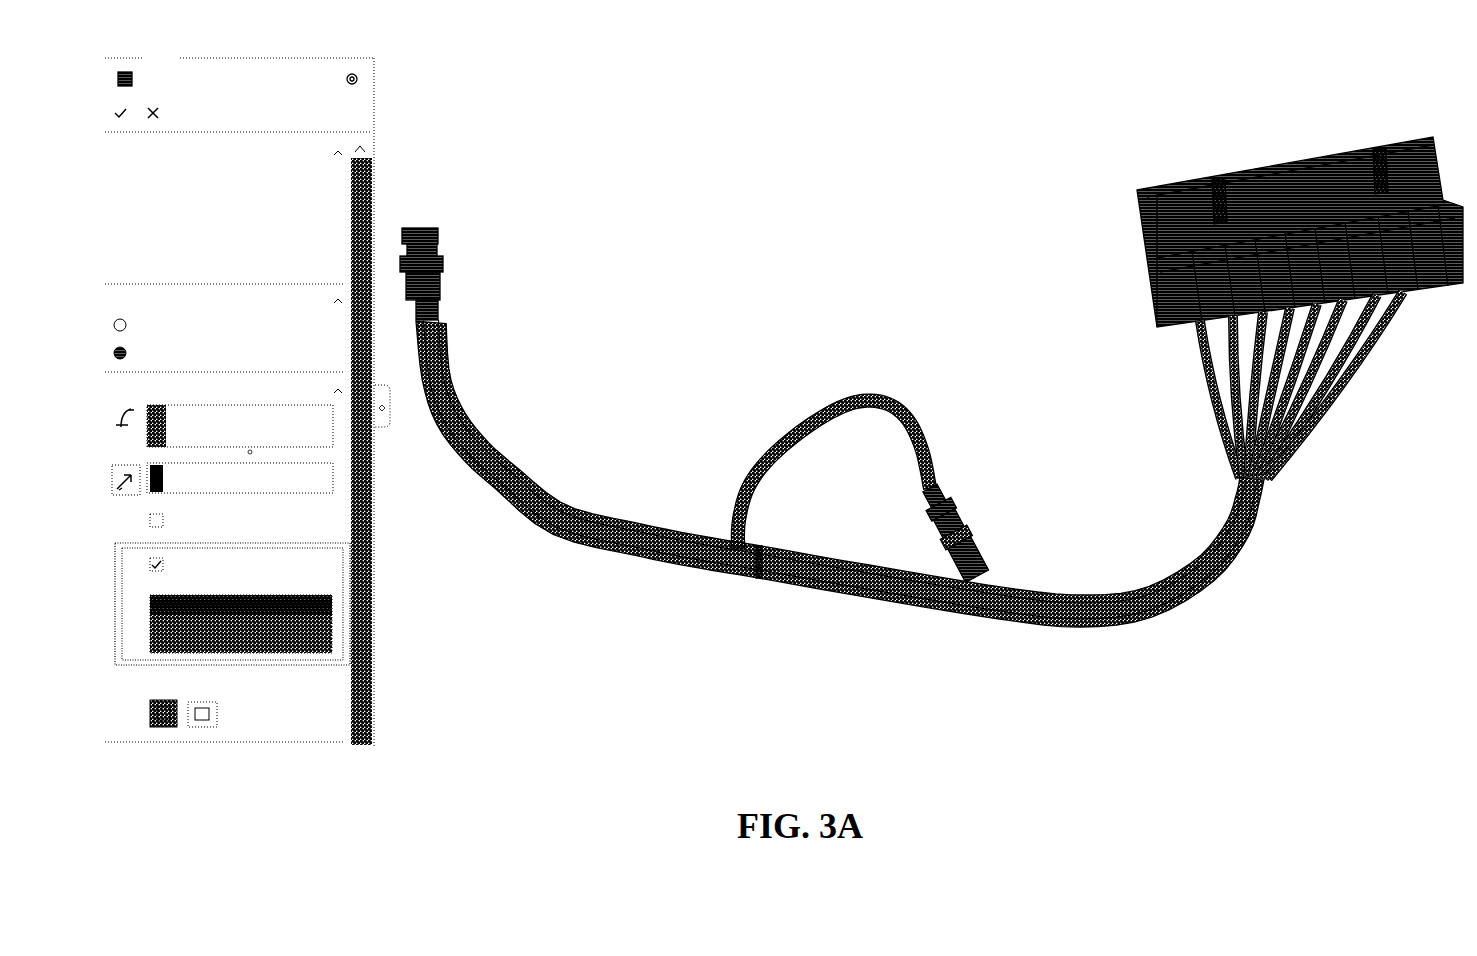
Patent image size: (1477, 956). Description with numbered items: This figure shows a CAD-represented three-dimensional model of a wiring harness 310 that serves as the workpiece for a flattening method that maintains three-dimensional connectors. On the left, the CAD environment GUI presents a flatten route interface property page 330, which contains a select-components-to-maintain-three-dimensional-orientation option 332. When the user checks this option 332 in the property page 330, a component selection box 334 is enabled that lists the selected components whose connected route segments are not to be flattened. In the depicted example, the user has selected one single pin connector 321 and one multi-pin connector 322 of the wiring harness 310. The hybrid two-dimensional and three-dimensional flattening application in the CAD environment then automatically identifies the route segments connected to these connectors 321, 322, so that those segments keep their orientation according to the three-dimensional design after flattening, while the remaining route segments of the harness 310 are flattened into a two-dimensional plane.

The wiring harness 310 is at (901, 462).
The single pin connector 321 is at (443, 260).
The multi-pin connector 322 is at (1152, 325).
The flatten route interface property page 330 is at (283, 405).
The Select components to Maintain 3D Orientation option 332 is at (288, 604).
The component selection box 334 is at (317, 647).